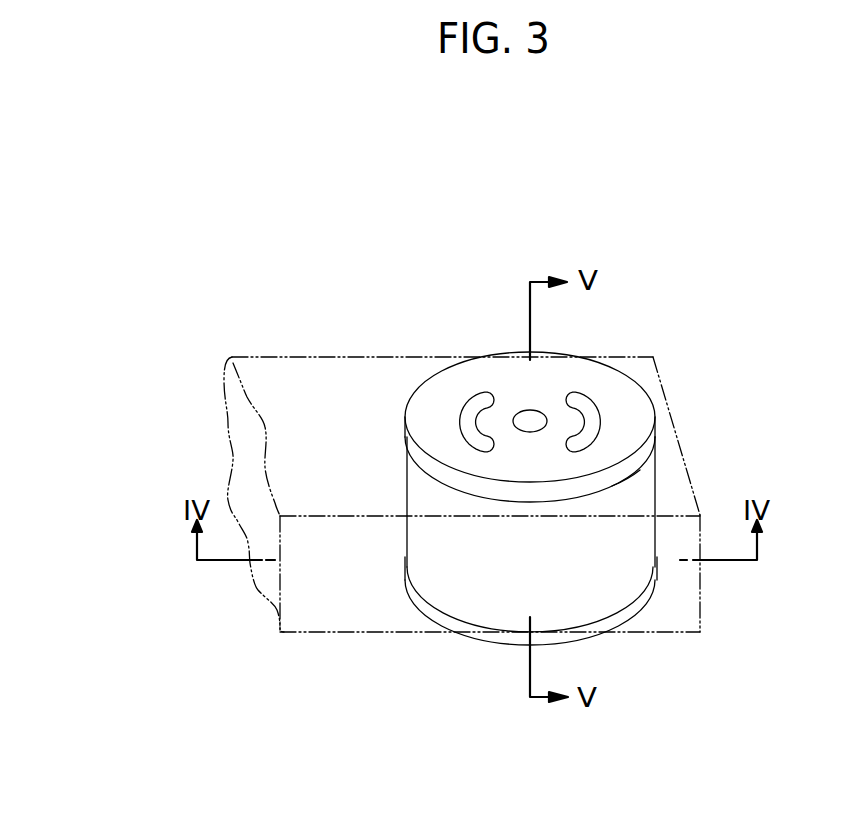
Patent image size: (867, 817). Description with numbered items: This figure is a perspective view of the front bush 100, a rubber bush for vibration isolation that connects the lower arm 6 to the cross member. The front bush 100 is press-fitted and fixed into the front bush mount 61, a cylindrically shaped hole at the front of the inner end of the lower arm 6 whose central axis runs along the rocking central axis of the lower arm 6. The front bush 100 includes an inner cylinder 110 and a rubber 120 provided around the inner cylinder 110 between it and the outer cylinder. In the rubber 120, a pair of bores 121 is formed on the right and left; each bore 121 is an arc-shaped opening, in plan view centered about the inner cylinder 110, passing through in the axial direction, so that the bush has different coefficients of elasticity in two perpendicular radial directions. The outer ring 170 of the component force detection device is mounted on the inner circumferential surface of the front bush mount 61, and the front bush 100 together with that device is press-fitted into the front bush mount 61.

The lower arm 6 is at (293, 388).
The front bush mount 61 is at (630, 480).
The front bush 100 is at (476, 473).
The inner cylinder 110 is at (535, 412).
The rubber 120 is at (497, 378).
The bores 121 is at (462, 417).
The outer ring 170 is at (423, 507).